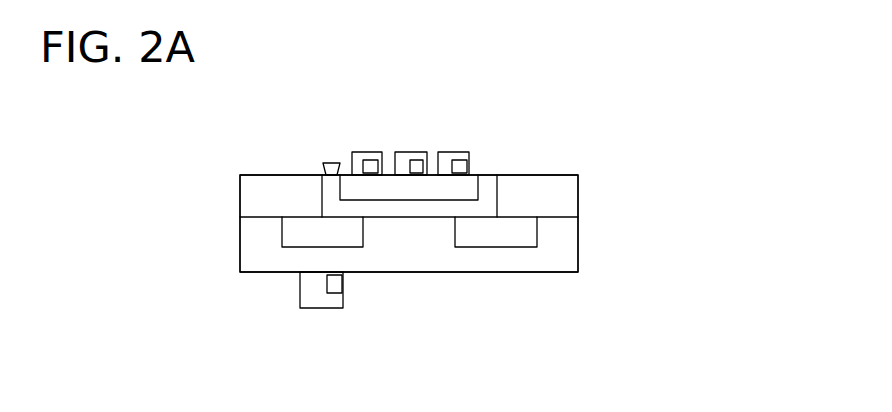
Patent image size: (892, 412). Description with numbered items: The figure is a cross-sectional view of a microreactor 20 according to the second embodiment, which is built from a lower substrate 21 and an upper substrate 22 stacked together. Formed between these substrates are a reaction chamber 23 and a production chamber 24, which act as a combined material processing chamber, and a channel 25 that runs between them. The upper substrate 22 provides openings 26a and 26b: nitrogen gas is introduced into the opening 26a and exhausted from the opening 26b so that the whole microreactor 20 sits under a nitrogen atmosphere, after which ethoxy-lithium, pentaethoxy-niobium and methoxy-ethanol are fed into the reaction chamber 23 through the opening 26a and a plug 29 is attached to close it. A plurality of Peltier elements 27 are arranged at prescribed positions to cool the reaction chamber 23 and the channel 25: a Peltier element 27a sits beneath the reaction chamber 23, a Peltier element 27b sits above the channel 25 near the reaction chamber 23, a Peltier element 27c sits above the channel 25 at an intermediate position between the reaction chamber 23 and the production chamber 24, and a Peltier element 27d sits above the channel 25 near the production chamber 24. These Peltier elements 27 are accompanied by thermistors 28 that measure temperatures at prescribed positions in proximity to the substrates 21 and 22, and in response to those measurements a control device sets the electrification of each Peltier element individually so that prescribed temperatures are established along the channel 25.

The microreactor 20 is at (660, 170).
The lower substrate 21 is at (240, 240).
The upper substrate 22 is at (240, 193).
The reaction chamber 23 is at (365, 238).
The production chamber 24 is at (537, 235).
The channel 25 is at (422, 199).
The opening 26a is at (323, 175).
The opening 26b is at (491, 175).
The Peltier elements 27 is at (445, 110).
The Peltier element 27a is at (322, 308).
The Peltier element 27b is at (367, 152).
The Peltier element 27c is at (419, 110).
The Peltier element 27d is at (455, 152).
The thermistors 28 is at (418, 160).
The plug 29 is at (323, 173).